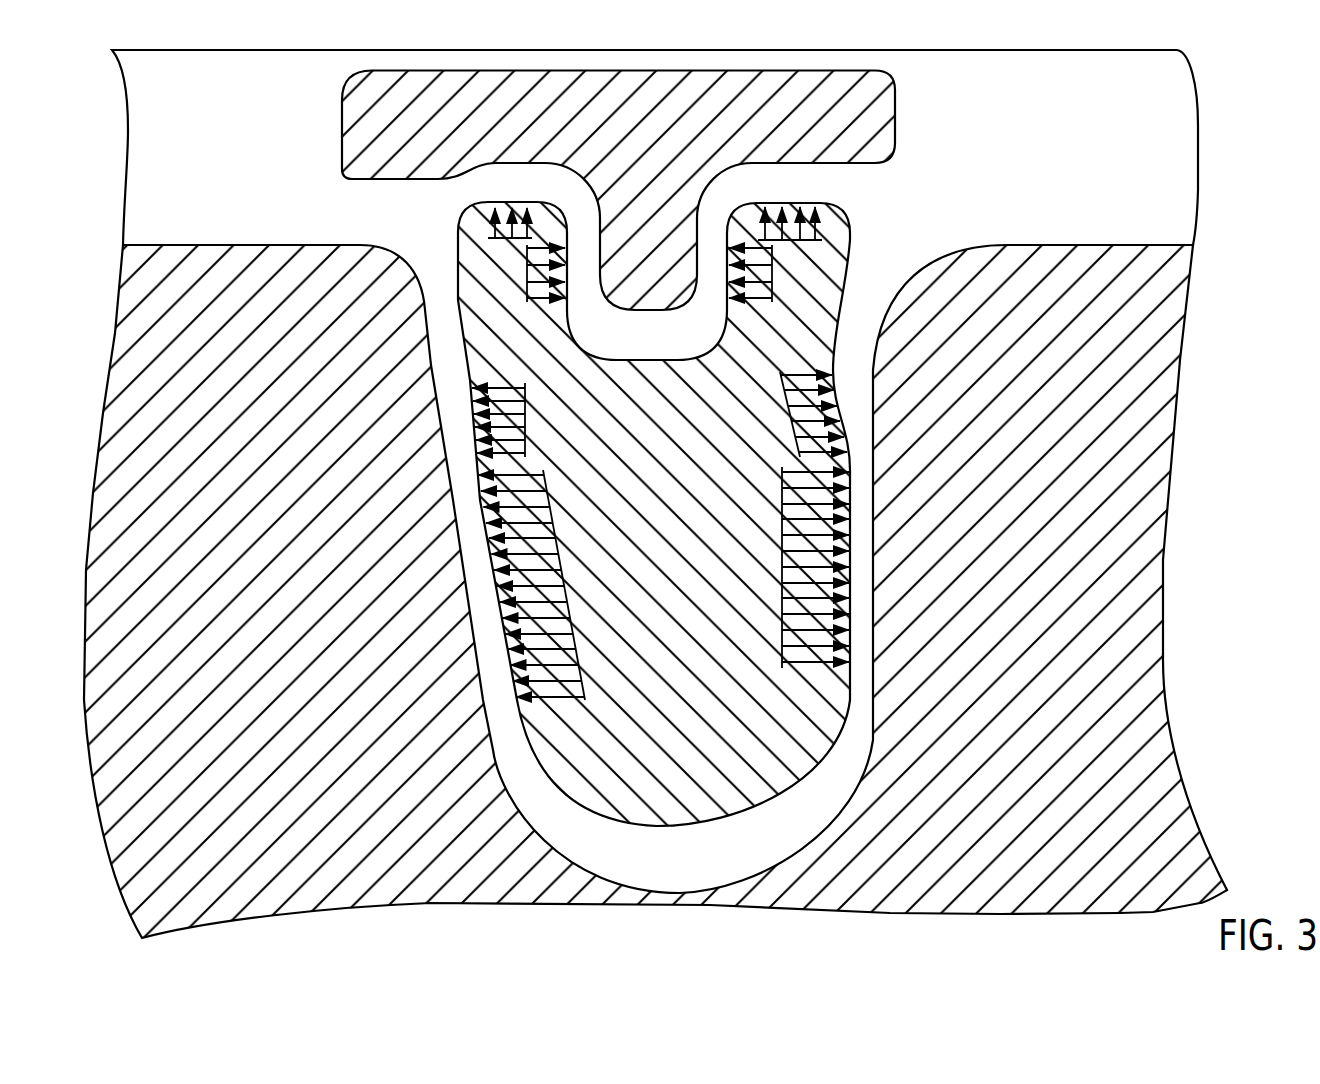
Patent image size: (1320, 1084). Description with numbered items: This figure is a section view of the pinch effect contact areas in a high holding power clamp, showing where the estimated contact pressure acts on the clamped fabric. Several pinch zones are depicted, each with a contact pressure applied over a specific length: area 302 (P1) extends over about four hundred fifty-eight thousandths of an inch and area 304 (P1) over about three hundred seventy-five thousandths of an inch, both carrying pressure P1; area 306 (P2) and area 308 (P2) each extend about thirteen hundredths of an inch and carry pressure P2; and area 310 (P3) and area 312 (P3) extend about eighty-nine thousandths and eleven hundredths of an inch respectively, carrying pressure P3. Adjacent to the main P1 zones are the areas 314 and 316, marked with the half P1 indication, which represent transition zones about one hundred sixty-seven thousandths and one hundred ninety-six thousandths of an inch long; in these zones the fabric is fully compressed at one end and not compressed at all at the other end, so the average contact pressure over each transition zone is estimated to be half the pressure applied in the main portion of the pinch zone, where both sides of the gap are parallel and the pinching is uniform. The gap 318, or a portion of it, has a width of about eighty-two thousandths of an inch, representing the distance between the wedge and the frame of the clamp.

The area (P1) 302 is at (577, 586).
The area (P1) 304 is at (768, 568).
The area (P2) 306 is at (522, 286).
The area (P2) 308 is at (773, 287).
The area (P3) 310 is at (503, 243).
The area (P3) 312 is at (795, 245).
The transition zone area (½ P1) 314 is at (532, 419).
The transition zone area (½ P1) 316 is at (787, 417).
The gap 318 is at (648, 867).